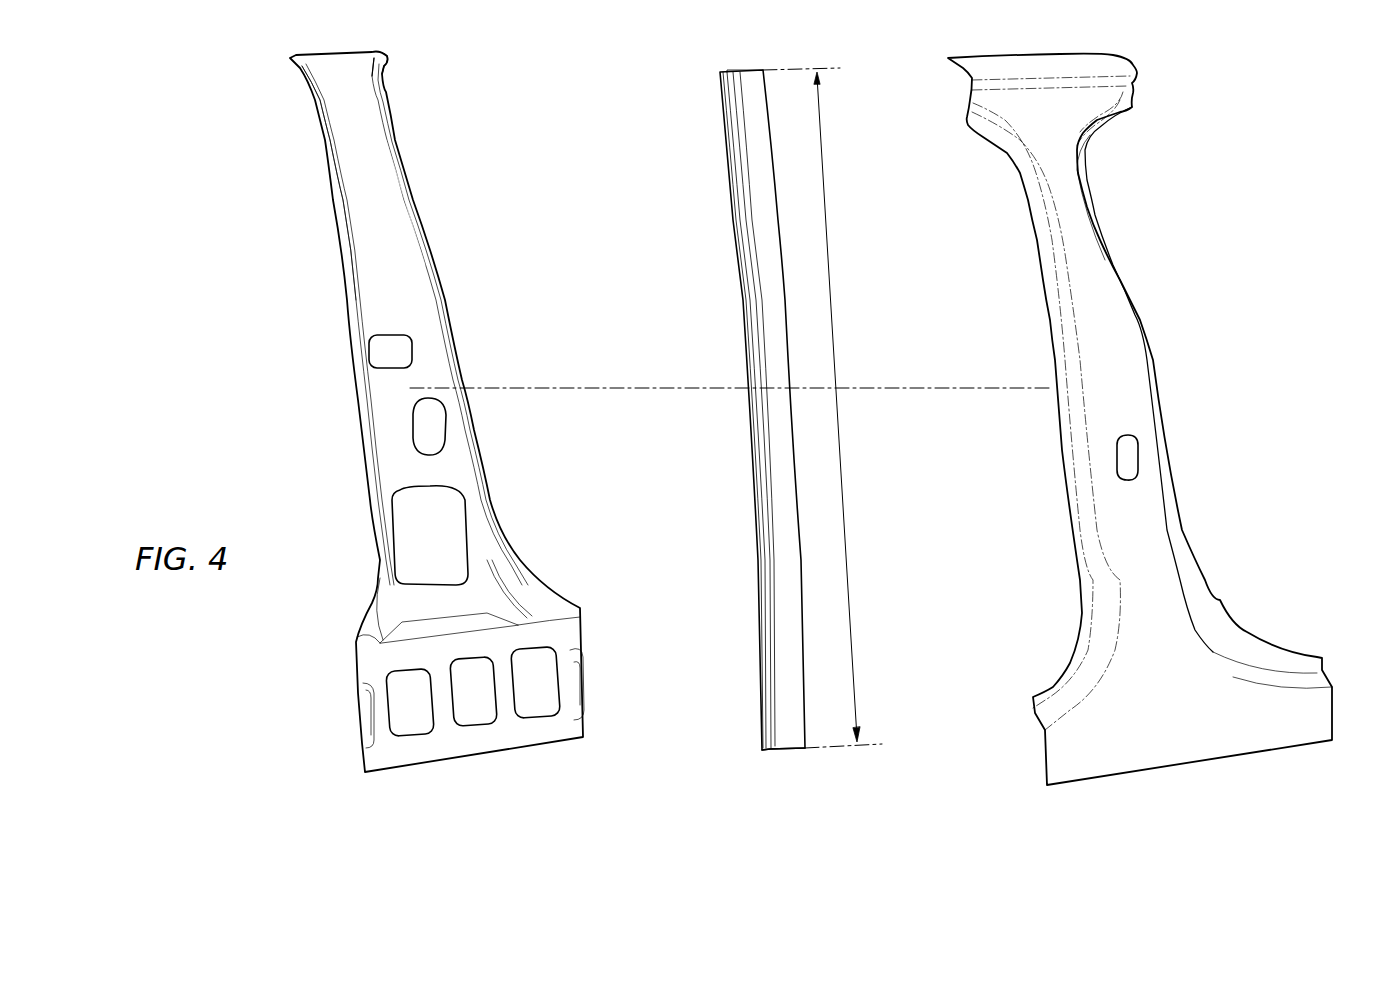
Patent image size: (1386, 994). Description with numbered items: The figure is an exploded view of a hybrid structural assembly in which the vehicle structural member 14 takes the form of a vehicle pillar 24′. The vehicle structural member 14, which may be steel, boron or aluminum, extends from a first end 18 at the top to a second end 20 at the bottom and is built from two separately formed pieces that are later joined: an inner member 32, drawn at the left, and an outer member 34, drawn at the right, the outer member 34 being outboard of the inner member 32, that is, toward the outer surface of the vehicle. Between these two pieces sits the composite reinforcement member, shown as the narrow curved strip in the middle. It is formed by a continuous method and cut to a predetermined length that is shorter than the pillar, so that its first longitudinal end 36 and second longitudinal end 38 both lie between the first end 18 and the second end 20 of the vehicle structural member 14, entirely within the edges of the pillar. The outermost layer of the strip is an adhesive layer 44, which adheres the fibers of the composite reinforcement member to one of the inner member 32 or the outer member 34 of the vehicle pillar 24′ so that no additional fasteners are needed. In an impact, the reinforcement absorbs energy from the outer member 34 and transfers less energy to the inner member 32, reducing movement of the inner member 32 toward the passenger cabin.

The vehicle structural member 14 is at (725, 437).
The first end 18 is at (370, 83).
The second end 20 is at (388, 745).
The vehicle pillar 24′ is at (328, 146).
The inner member 32 is at (402, 272).
The outer member 34 is at (1115, 318).
The first longitudinal end 36 is at (718, 81).
The second longitudinal end 38 is at (760, 735).
The adhesive layer 44 is at (742, 250).